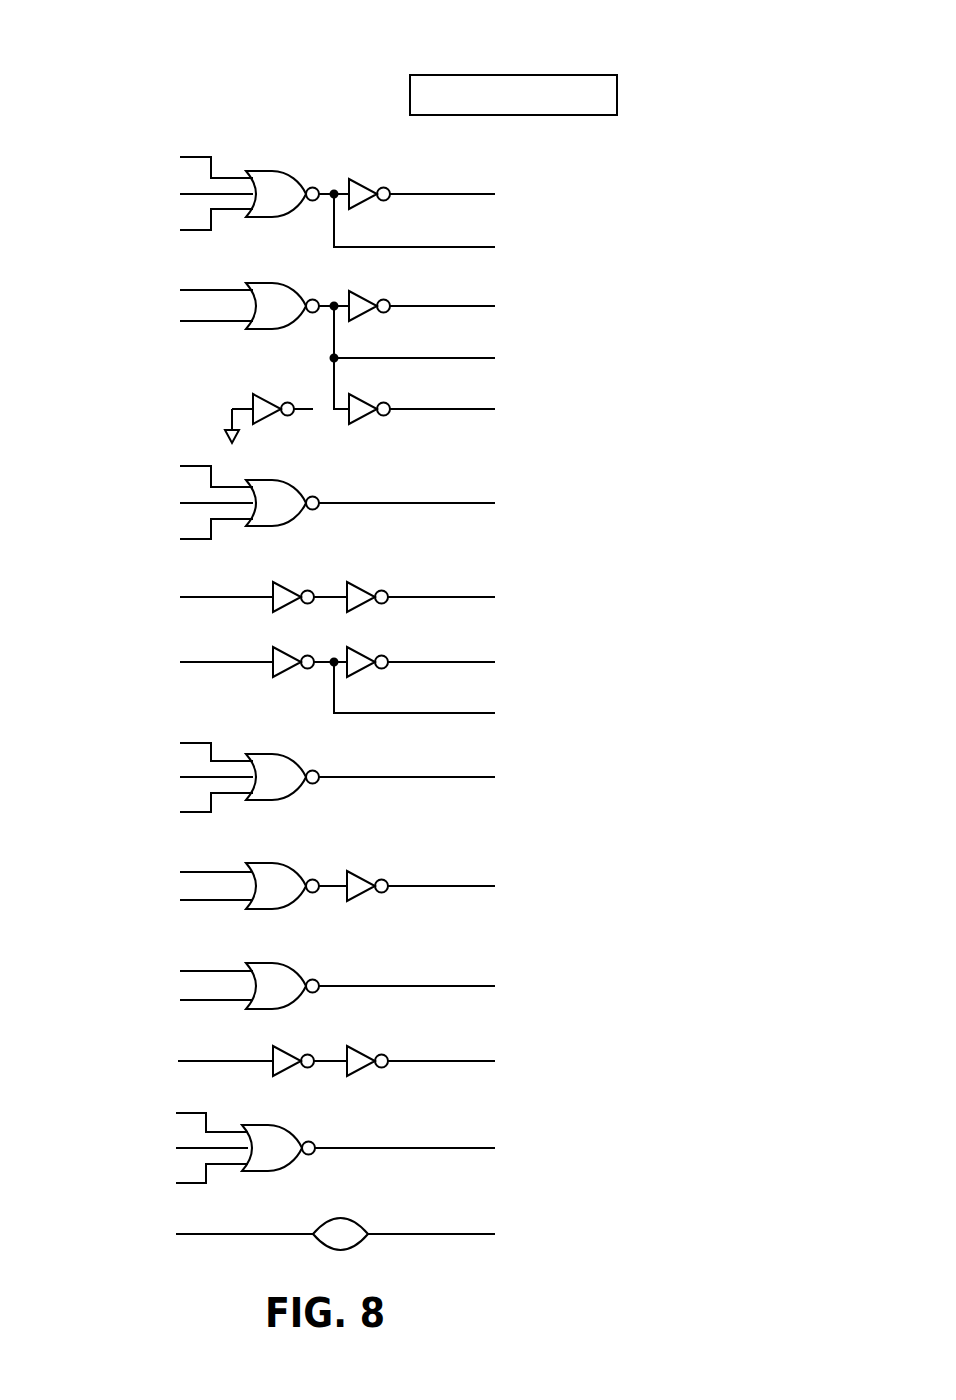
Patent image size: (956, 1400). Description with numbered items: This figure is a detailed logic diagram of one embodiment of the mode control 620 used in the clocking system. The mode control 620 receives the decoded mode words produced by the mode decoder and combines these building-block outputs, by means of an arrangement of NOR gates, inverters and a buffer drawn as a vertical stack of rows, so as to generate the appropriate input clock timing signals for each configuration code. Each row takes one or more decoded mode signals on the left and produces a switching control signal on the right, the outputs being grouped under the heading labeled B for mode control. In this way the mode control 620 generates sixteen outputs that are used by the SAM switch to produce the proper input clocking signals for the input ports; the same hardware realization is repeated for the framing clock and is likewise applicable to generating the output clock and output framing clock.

The mode control 620 is at (287, 86).
The mode control block B is at (512, 114).